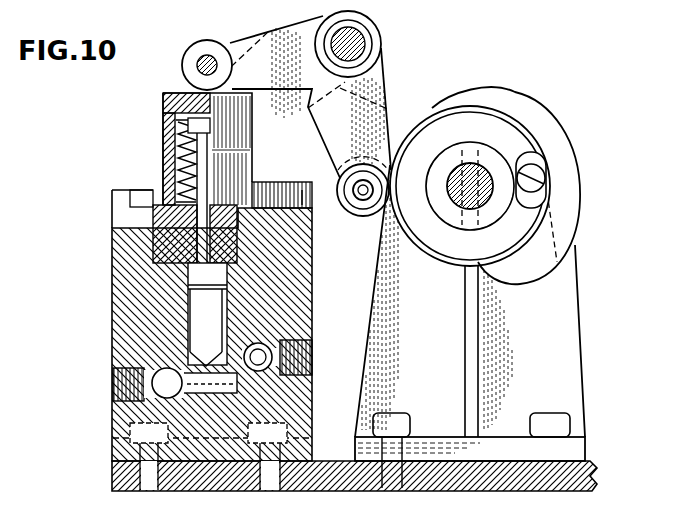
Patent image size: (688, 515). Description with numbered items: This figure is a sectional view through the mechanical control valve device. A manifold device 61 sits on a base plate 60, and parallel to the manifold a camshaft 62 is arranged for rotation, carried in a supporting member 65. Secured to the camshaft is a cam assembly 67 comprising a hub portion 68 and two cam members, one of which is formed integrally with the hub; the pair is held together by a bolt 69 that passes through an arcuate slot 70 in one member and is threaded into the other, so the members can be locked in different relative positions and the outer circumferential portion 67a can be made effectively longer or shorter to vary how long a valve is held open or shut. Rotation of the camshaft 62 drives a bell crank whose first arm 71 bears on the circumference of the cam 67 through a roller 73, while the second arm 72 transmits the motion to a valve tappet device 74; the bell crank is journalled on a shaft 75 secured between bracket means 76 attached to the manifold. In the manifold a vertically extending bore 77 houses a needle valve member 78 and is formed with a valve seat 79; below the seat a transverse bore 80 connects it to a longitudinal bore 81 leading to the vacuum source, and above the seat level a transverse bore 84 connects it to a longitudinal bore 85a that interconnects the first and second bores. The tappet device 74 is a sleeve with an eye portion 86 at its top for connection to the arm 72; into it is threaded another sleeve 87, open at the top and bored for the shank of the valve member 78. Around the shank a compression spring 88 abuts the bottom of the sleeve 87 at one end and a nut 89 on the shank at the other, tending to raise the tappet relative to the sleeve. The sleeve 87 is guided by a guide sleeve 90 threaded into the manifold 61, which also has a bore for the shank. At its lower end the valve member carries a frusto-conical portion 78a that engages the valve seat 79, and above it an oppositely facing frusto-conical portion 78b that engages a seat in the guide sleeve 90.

The base plate 60 is at (572, 470).
The manifold device 61 is at (140, 250).
The camshaft 62 is at (490, 200).
The supporting member 65 is at (540, 302).
The cam assembly 67 is at (462, 128).
The outer circumferential portion 67a is at (508, 92).
The hub portion 68 is at (490, 165).
The bolt 69 is at (535, 170).
The screw slot 70 is at (545, 167).
The bell crank arm 71 is at (368, 116).
The bell crank arm 72 is at (257, 63).
The roller 73 is at (363, 216).
The valve tappet device 74 is at (160, 114).
The shaft 75 is at (370, 37).
The bracket means 76 is at (307, 202).
The bore 77 is at (188, 312).
The needle valve member 78 is at (200, 336).
The frusto-conical portion 78a is at (232, 333).
The frusto-conical portion 78b is at (188, 300).
The valve seat 79 is at (160, 396).
The transverse bore 80 is at (118, 375).
The longitudinal bore 81 is at (176, 378).
The transverse bore 84 is at (262, 357).
The longitudinal bore 85a is at (298, 348).
The eye portion 86 is at (188, 57).
The sleeve 87 is at (180, 165).
The compression spring 88 is at (192, 104).
The nut 89 is at (163, 100).
The guide sleeve 90 is at (110, 191).